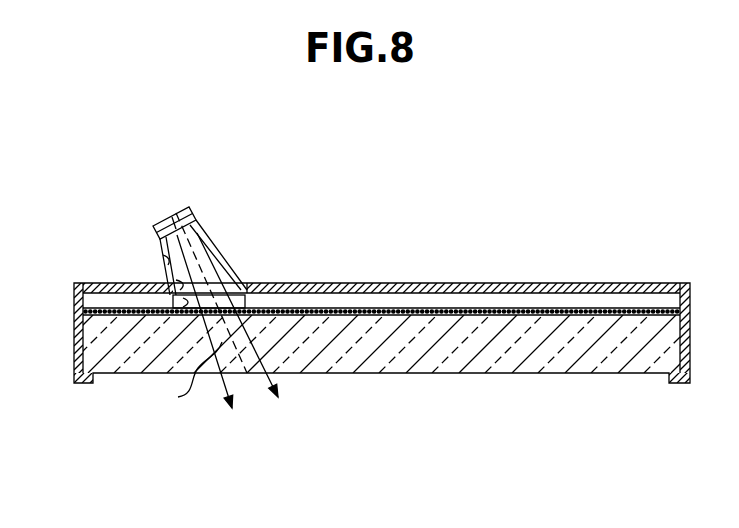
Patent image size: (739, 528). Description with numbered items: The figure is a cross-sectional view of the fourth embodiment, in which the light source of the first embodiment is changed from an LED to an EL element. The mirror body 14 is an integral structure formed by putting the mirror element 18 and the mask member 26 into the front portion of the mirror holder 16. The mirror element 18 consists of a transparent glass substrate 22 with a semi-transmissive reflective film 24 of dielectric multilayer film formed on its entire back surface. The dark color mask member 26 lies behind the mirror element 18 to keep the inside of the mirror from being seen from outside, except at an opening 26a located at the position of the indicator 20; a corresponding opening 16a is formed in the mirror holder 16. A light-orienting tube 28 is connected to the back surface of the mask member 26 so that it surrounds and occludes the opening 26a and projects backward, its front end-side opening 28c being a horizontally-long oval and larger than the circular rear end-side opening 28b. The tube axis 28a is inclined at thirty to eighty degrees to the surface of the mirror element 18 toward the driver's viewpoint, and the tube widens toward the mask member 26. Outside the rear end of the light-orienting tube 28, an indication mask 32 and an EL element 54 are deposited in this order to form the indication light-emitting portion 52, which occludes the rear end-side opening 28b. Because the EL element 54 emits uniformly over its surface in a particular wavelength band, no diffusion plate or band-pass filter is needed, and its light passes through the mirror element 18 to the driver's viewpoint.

The mirror body 14 is at (530, 243).
The mirror holder 16 is at (377, 291).
The opening 16a is at (247, 284).
The mirror element 18 is at (540, 378).
The indicator 20 is at (248, 383).
The transparent glass substrate 22 is at (400, 360).
The semi-transmissive reflective film 24 is at (478, 315).
The mask member 26 is at (428, 300).
The opening 26a is at (183, 313).
The light-orienting tube 28 is at (220, 256).
The tube axis 28a is at (170, 213).
The rear end-side opening 28b is at (163, 258).
The front end-side opening 28c is at (168, 276).
The indication mask 32 is at (193, 213).
The indication light-emitting portion 52 is at (160, 242).
The EL element 54 is at (172, 215).